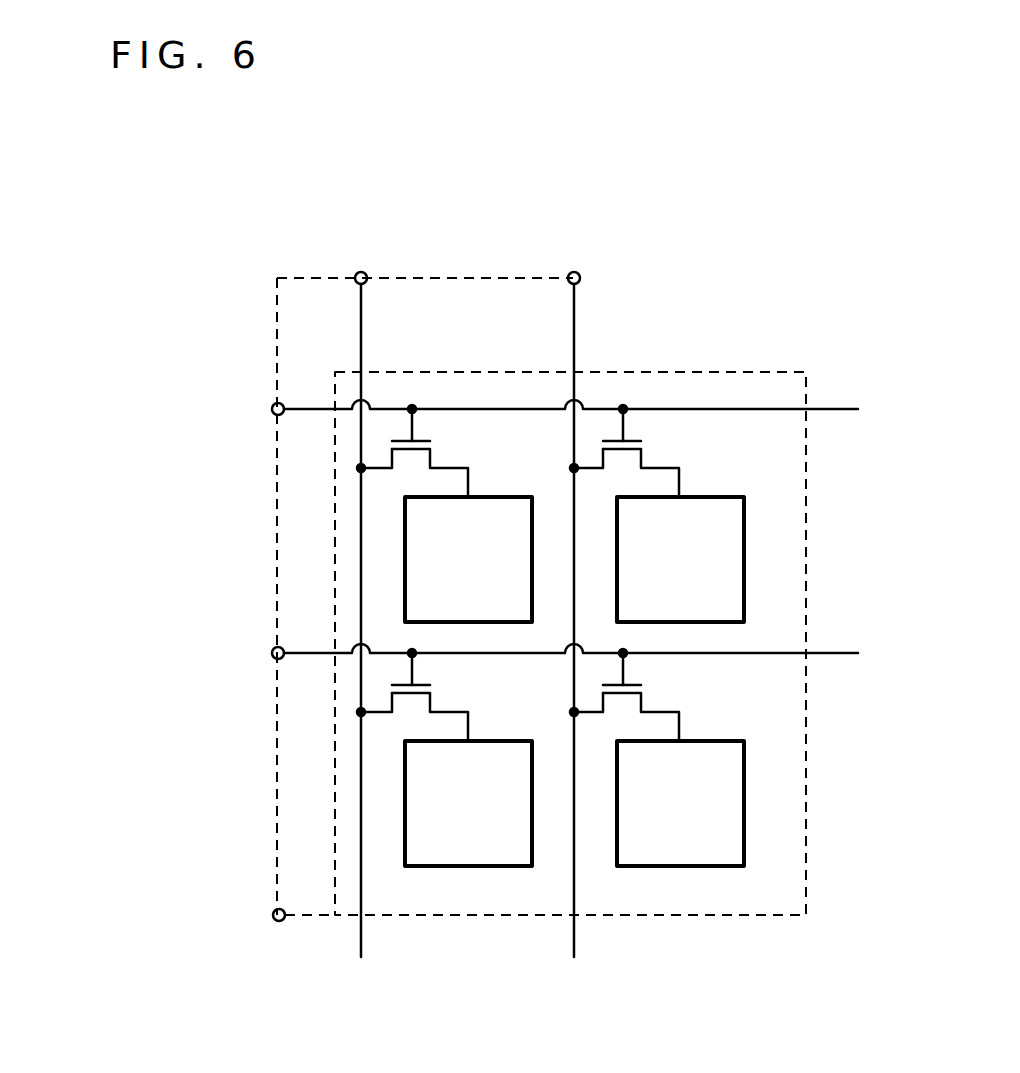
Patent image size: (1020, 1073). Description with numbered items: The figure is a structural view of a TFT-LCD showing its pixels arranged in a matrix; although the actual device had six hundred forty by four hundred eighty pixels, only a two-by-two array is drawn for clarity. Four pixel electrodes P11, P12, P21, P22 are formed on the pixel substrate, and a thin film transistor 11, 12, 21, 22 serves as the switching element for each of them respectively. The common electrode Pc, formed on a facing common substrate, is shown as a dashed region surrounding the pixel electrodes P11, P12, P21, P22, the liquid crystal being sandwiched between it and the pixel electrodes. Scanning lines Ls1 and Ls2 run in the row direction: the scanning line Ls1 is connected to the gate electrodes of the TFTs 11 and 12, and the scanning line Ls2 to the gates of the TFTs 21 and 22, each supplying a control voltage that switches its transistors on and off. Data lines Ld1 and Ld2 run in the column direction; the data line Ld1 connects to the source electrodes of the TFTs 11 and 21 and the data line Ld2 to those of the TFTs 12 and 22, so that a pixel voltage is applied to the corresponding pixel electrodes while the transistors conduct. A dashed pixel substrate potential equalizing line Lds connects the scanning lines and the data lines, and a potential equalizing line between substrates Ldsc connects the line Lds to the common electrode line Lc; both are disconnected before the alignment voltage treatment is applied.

The pixel substrate potential equalizing line Lds is at (277, 296).
The potential equalizing line between substrates Ldsc is at (277, 731).
The data line Ld1 is at (360, 310).
The data line Ld2 is at (573, 310).
The scanning line Ls1 is at (311, 409).
The scanning line Ls2 is at (311, 653).
The common electrode line Lc is at (311, 917).
The common electrode Pc is at (476, 916).
The thin film transistor 11 is at (440, 442).
The thin film transistor 12 is at (652, 442).
The thin film transistor 21 is at (440, 686).
The thin film transistor 22 is at (652, 686).
The pixel electrode P11 is at (468, 559).
The pixel electrode P12 is at (680, 559).
The pixel electrode P21 is at (468, 803).
The pixel electrode P22 is at (680, 803).